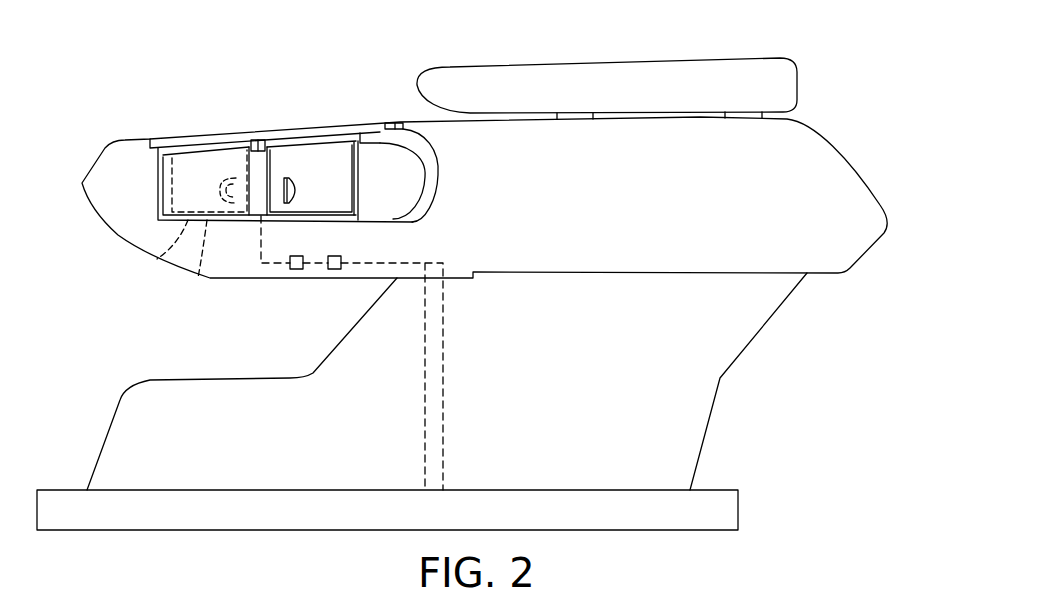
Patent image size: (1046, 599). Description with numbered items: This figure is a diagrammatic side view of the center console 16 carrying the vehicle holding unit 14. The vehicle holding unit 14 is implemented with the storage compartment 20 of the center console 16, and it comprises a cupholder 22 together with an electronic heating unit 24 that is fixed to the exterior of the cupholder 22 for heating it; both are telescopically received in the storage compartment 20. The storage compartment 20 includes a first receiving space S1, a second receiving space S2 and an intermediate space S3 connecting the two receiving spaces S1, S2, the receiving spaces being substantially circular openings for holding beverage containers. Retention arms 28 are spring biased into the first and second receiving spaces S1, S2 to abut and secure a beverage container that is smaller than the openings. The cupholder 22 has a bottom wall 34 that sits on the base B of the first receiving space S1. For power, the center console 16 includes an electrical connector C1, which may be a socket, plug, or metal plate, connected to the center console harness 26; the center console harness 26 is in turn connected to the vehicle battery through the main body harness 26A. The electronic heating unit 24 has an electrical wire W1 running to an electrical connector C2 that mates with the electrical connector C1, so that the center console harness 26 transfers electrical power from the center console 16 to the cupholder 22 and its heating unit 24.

The vehicle holding unit 14 is at (183, 47).
The center console 16 is at (735, 57).
The storage compartment 20 is at (170, 110).
The cupholder 22 is at (172, 173).
The electronic heating unit 24 is at (268, 139).
The center console harness 26 is at (443, 357).
The main body harness 26A is at (230, 490).
The retention arm 28 is at (297, 187).
The bottom wall 34 is at (150, 261).
The base B is at (197, 280).
The electrical wire W1 is at (272, 262).
The electrical connector C1 is at (335, 269).
The electrical connector C2 is at (296, 269).
The first receiving space S1 is at (220, 123).
The second receiving space S2 is at (310, 117).
The intermediate space S3 is at (253, 143).